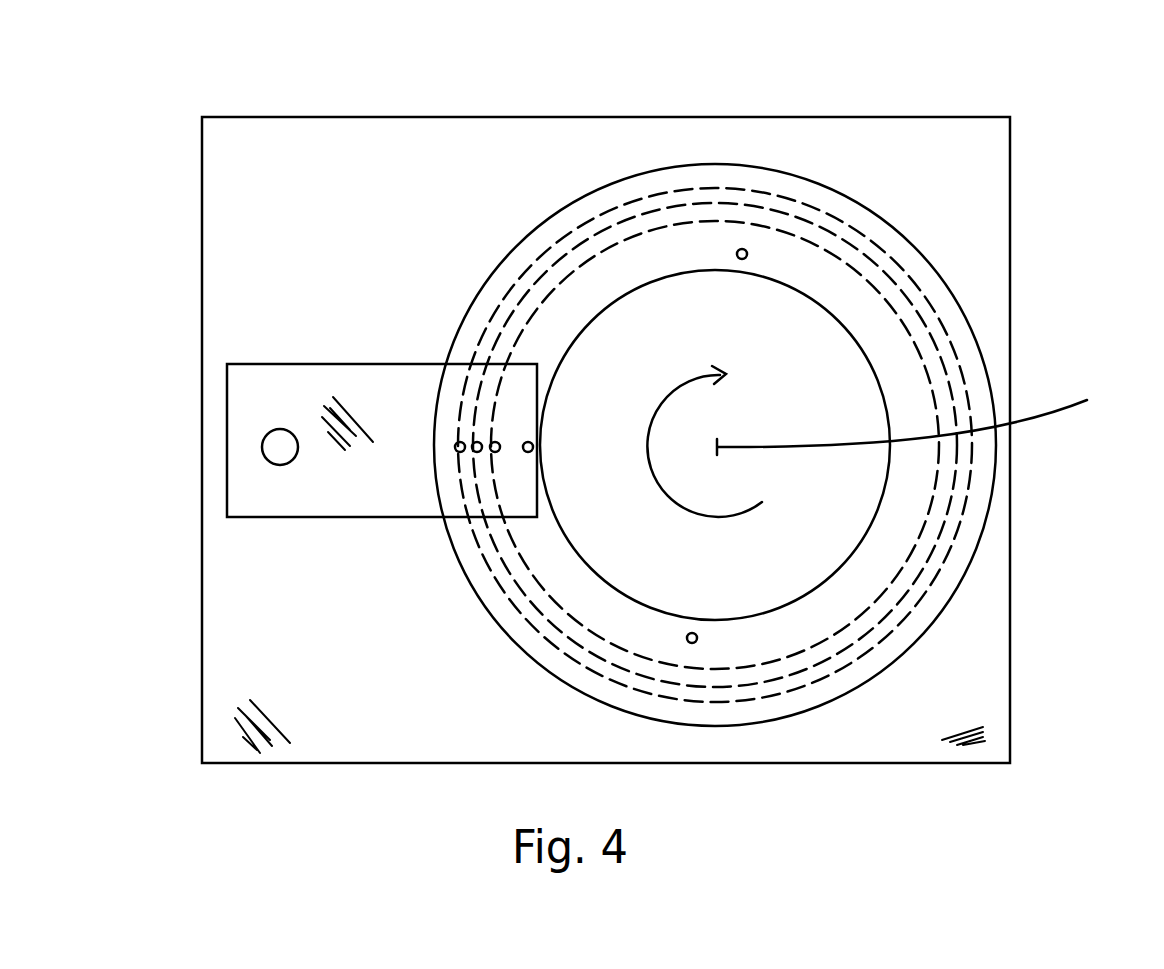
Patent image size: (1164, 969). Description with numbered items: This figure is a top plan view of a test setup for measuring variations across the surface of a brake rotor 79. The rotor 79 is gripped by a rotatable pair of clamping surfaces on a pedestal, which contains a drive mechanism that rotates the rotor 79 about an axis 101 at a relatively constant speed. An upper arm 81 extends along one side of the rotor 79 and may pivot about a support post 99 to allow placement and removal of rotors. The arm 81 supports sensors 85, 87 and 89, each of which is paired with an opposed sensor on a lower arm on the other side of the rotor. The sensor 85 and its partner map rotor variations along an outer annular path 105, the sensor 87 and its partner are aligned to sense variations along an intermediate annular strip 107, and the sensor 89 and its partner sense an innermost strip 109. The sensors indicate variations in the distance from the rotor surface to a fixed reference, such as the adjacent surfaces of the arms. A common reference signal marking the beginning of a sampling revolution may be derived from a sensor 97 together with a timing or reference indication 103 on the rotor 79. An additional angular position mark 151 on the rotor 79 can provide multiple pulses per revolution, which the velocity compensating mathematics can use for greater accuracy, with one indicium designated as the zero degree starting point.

The rotor 79 is at (923, 272).
The upper arm 81 is at (318, 500).
The sensor 85 is at (457, 443).
The sensor 87 is at (476, 452).
The sensor 89 is at (496, 452).
The sensor 97 is at (534, 447).
The support post 99 is at (262, 446).
The axis 101 is at (929, 416).
The timing or reference indication 103 is at (688, 636).
The outer annular path 105 is at (970, 455).
The intermediate annular strip 107 is at (937, 543).
The innermost strip 109 is at (878, 597).
The mark 151 is at (738, 252).